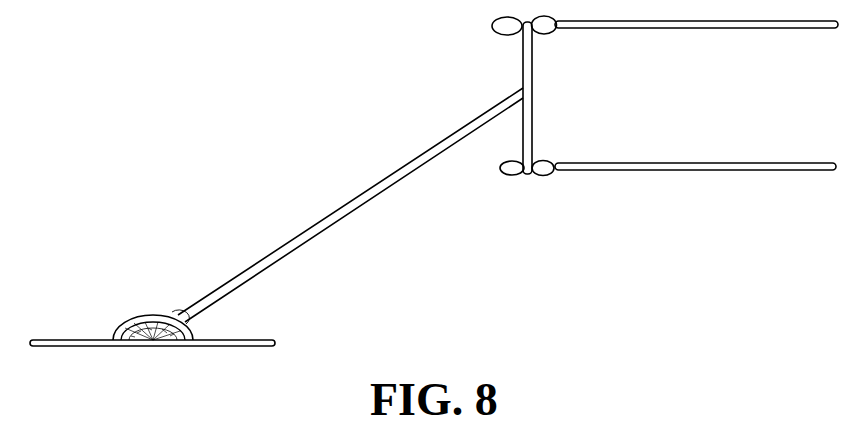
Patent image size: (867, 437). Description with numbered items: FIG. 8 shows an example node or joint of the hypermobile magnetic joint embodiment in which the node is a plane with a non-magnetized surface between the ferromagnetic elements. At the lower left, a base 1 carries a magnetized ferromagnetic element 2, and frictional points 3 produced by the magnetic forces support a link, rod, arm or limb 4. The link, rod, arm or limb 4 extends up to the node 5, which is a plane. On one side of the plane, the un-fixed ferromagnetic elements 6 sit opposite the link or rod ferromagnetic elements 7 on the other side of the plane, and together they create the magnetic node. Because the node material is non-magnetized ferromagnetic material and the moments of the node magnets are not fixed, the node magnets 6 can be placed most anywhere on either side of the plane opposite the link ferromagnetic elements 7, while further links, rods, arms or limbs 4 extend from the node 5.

The base 1 is at (206, 348).
The magnetized ferromagnetic element 2 is at (139, 318).
The frictional points 3 is at (176, 318).
The link, rod, arm, or limb 4 is at (822, 30).
The node 5 is at (518, 47).
The un-fixed ferromagnetic element 6 is at (490, 32).
The link/rod ferromagnetic element 7 is at (557, 35).